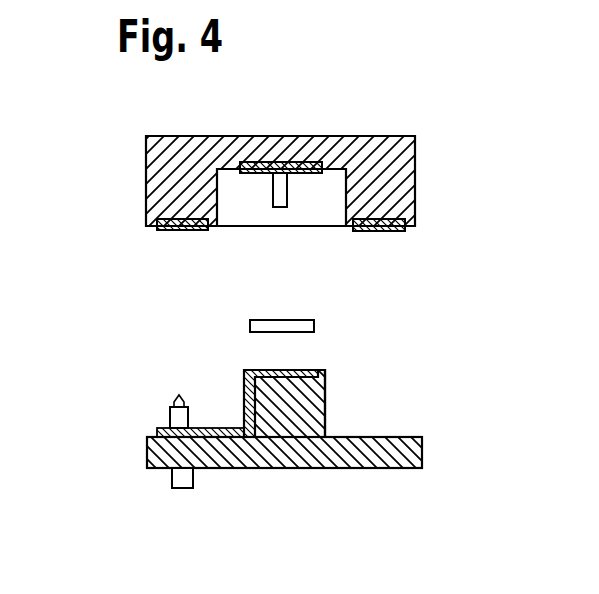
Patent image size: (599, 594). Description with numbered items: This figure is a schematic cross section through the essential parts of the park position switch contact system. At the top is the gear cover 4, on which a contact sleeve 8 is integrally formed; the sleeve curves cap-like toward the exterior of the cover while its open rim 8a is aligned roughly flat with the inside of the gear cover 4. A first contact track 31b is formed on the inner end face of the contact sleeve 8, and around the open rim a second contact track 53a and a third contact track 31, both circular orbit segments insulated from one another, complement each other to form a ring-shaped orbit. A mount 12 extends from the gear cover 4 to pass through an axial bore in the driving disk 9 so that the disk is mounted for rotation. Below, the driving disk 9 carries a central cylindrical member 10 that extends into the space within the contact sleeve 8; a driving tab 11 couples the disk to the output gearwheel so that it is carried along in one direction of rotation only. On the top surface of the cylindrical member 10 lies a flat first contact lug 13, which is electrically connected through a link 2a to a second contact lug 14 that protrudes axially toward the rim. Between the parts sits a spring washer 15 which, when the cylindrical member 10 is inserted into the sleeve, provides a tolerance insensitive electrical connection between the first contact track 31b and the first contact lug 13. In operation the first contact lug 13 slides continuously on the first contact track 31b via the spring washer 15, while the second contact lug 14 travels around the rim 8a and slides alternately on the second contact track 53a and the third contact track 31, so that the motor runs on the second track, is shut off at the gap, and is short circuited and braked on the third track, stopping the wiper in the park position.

The gear cover 4 is at (381, 142).
The contact sleeve 8 is at (345, 197).
The open rim of the sleeve 8a is at (208, 230).
The mount 12 is at (273, 207).
The third contact track 31 is at (160, 228).
The first contact track 31b is at (304, 162).
The second contact track 53a is at (404, 231).
The spring washer 15 is at (314, 326).
The driving disk 9 is at (395, 470).
The cylindrical member 10 is at (318, 397).
The first contact lug 13 is at (245, 373).
The link 2a is at (244, 399).
The second contact lug 14 is at (170, 416).
The driving tab 11 is at (172, 485).